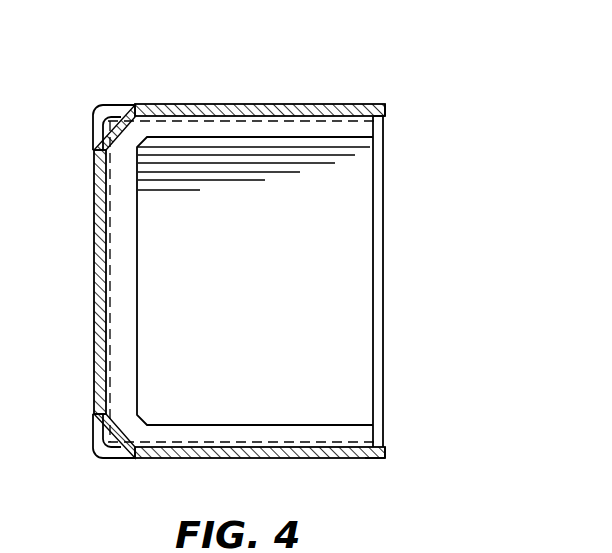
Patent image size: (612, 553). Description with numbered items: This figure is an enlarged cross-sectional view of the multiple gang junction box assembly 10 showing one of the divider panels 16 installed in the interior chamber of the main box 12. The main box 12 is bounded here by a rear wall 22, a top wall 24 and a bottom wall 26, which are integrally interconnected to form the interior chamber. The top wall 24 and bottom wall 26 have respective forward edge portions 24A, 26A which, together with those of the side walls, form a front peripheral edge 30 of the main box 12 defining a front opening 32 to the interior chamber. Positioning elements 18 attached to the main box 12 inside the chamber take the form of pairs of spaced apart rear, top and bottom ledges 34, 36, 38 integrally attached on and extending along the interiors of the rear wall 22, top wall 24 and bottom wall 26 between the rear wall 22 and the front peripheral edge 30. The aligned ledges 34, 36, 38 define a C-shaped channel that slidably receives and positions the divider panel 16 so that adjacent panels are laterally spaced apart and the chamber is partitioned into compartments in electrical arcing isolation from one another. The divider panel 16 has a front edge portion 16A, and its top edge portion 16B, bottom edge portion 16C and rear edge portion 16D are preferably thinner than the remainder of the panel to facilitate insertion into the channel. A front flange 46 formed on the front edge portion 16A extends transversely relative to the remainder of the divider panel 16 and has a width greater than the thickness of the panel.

The multiple gang junction box assembly 10 is at (142, 86).
The main box 12 is at (360, 102).
The divider panel 16 is at (353, 345).
The front edge portion 16A is at (370, 258).
The top edge portion 16B is at (303, 118).
The bottom edge portion 16C is at (285, 463).
The rear edge portion 16D is at (96, 270).
The positioning element 18 is at (212, 146).
The rear wall 22 is at (96, 322).
The top wall 24 is at (208, 104).
The forward edge portion of top wall 24A is at (386, 107).
The bottom wall 26 is at (182, 459).
The forward edge portion of bottom wall 26A is at (385, 453).
The front peripheral edge 30 is at (370, 459).
The front opening 32 is at (374, 123).
The rear ledge 34 is at (126, 308).
The top ledge 36 is at (286, 123).
The bottom ledge 38 is at (228, 435).
The front flange 46 is at (380, 300).